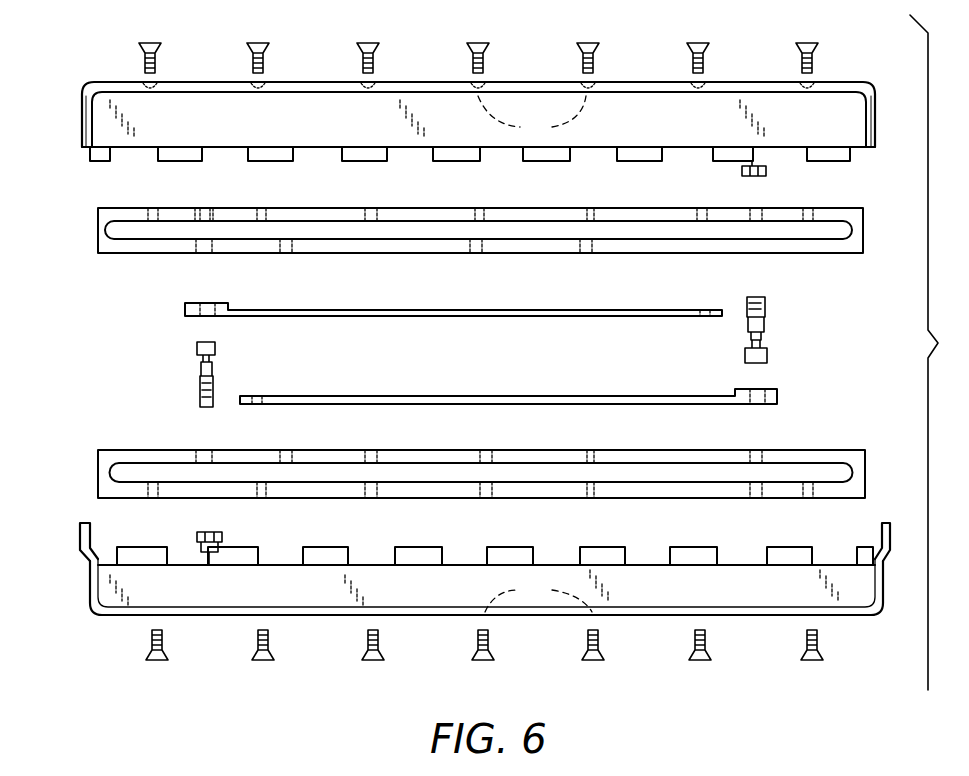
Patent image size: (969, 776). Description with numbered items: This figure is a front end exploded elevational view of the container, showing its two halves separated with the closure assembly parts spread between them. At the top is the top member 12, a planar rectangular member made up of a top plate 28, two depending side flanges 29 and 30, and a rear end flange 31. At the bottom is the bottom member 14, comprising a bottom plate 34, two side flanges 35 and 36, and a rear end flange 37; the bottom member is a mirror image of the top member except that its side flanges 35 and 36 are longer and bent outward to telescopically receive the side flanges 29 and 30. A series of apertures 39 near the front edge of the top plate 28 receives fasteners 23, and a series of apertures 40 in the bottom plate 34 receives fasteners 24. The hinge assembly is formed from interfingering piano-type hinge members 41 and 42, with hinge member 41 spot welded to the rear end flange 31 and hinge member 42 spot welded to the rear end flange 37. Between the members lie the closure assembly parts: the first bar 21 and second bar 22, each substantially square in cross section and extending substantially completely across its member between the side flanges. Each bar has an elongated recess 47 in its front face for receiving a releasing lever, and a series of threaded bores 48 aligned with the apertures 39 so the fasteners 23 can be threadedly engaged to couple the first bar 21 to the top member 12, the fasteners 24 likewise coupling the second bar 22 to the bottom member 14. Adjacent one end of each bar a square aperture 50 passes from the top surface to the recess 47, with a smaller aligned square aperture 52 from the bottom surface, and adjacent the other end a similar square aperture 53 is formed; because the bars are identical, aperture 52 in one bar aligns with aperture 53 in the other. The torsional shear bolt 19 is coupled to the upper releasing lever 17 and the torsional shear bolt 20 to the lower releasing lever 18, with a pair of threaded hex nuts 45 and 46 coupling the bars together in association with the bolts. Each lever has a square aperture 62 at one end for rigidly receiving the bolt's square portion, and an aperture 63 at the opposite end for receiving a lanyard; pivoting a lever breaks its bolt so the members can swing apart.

The top member 12 is at (428, 80).
The bottom member 14 is at (420, 622).
The upper releasing lever 17 is at (570, 300).
The lower releasing lever 18 is at (604, 390).
The torsional shear bolt 19 is at (232, 341).
The torsional shear bolt 20 is at (764, 312).
The first bar 21 is at (836, 206).
The second bar 22 is at (834, 448).
The fasteners 23 is at (584, 45).
The fasteners 24 is at (592, 657).
The top plate 28 is at (636, 82).
The side flange 29 is at (877, 108).
The side flange 30 is at (82, 110).
The rear end flange 31 is at (512, 148).
The bottom plate 34 is at (632, 617).
The side flange 35 is at (878, 592).
The side flange 36 is at (88, 587).
The rear end flange 37 is at (556, 565).
The apertures 39 is at (532, 115).
The apertures 40 is at (538, 599).
The hinge member 41 is at (650, 161).
The hinge member 42 is at (690, 547).
The threaded hex nut 45 is at (767, 172).
The threaded hex nut 46 is at (220, 532).
The elongated recess 47 is at (850, 231).
The threaded bores 48 is at (590, 207).
The square aperture 50 is at (205, 209).
The square aperture 52 is at (210, 254).
The square aperture 53 is at (757, 212).
The square aperture 62 is at (205, 304).
The aperture 63 is at (698, 308).